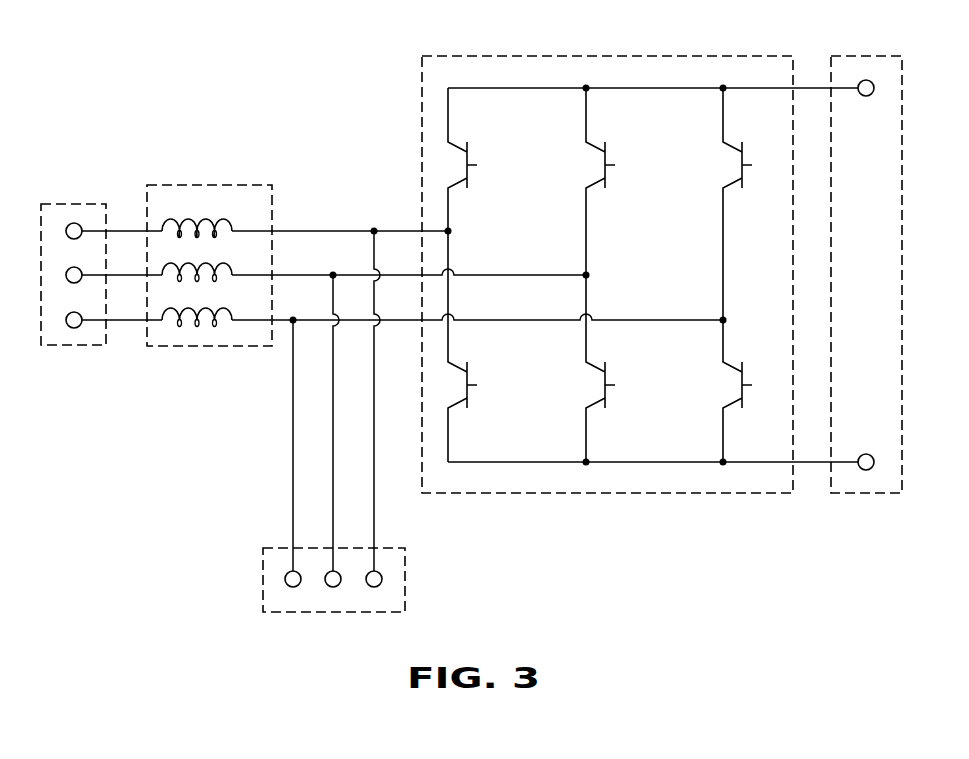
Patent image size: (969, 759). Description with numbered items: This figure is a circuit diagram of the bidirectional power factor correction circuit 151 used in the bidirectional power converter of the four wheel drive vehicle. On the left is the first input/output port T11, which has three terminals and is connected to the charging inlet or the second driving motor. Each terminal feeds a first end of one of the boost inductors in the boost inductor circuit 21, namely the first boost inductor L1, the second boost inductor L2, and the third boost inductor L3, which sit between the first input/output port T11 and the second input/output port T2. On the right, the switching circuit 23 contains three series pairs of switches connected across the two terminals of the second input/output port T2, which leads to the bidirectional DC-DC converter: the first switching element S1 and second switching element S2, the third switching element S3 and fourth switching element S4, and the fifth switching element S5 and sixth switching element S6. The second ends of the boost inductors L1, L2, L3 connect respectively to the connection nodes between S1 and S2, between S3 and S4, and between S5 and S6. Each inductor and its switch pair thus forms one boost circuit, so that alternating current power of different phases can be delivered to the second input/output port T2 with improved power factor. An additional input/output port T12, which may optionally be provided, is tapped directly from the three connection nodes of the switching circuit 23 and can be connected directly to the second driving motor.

The bidirectional power factor correction circuit 151 is at (280, 118).
The boost inductor circuit 21 is at (195, 347).
The switching circuit 23 is at (630, 495).
The first input/output port T11 is at (72, 203).
The additional input/output port T12 is at (405, 579).
The second input/output port T2 is at (853, 495).
The first boost inductor L1 is at (212, 220).
The second boost inductor L2 is at (212, 266).
The third boost inductor L3 is at (213, 311).
The first switching element S1 is at (477, 159).
The second switching element S2 is at (477, 346).
The third switching element S3 is at (615, 181).
The fourth switching element S4 is at (615, 368).
The fifth switching element S5 is at (752, 204).
The sixth switching element S6 is at (752, 391).